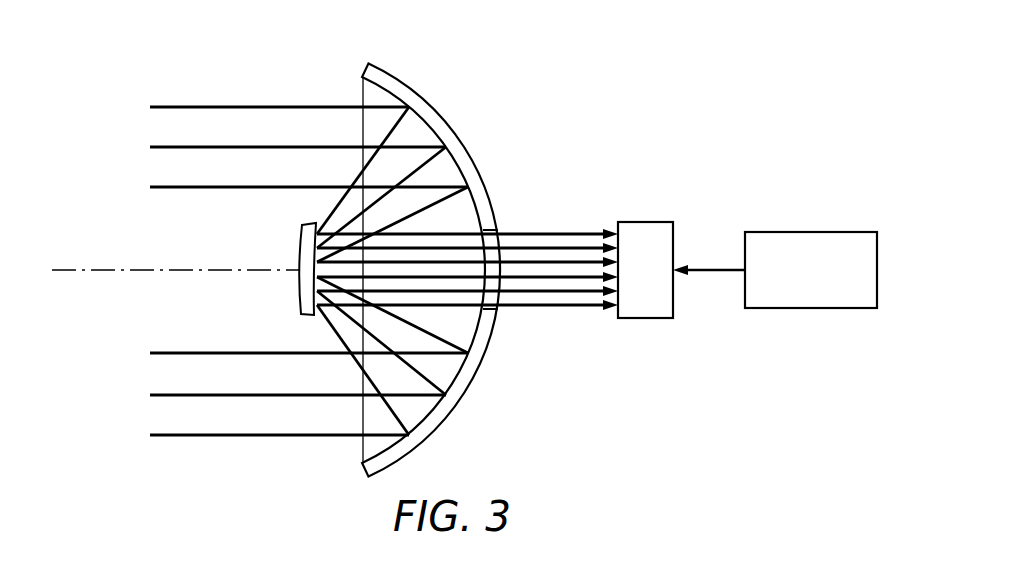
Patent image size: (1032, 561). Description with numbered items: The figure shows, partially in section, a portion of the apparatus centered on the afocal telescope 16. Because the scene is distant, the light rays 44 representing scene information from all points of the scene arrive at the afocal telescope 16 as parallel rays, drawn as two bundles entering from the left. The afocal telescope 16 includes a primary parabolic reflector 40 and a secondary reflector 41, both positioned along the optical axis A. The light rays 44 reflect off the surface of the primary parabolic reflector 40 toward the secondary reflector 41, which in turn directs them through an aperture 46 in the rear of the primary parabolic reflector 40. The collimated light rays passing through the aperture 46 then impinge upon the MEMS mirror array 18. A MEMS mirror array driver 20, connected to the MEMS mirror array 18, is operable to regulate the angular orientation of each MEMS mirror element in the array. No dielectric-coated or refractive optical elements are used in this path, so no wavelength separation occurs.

The afocal telescope 16 is at (285, 52).
The MEMS mirror array 18 is at (645, 222).
The MEMS mirror array driver 20 is at (796, 232).
The primary parabolic reflector 40 is at (400, 80).
The secondary reflector 41 is at (302, 294).
The light rays 44 is at (137, 95).
The aperture 46 is at (499, 231).
The optical axis A is at (100, 272).